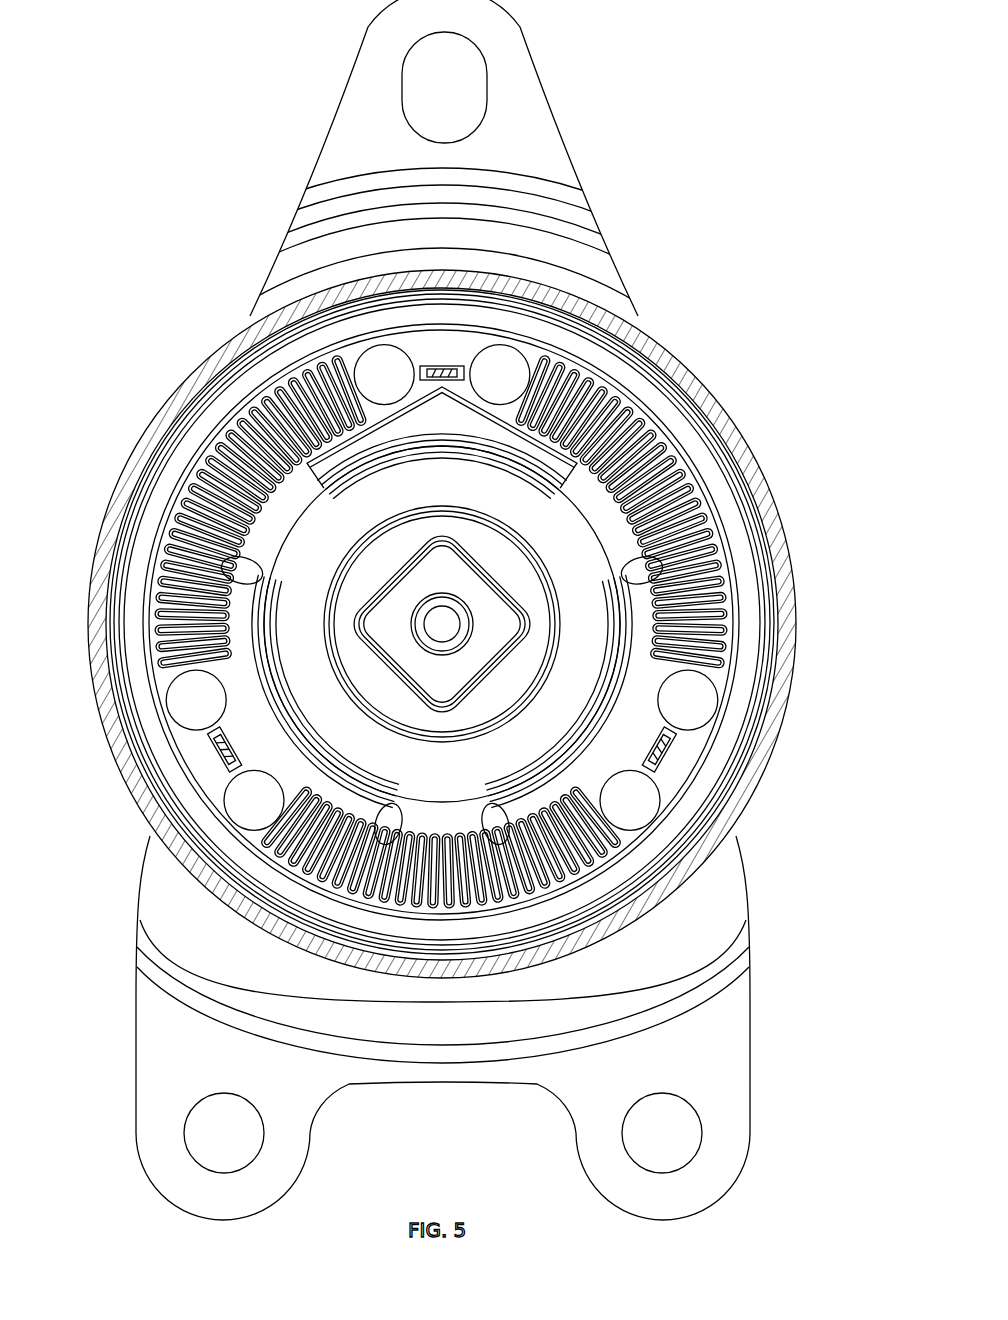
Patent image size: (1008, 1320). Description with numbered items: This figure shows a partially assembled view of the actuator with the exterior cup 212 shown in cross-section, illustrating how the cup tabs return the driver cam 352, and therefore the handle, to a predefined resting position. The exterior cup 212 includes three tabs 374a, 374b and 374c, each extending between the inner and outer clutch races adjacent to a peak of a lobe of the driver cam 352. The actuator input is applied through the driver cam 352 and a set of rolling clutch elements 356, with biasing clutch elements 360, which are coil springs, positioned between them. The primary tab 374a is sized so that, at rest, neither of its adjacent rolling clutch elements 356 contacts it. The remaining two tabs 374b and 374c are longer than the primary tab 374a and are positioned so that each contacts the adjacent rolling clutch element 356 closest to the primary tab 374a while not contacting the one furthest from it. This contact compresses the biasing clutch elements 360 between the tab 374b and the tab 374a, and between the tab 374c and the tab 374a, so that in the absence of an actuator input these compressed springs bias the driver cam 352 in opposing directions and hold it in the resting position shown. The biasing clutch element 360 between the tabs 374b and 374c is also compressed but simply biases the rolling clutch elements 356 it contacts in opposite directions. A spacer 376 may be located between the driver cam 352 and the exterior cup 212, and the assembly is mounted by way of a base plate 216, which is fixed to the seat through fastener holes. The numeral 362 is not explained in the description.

The exterior cup 212 is at (770, 503).
The base plate 216 is at (727, 1055).
The driver cam 352 is at (566, 424).
The rolling clutch elements 356 is at (536, 588).
The biasing clutch elements 360 is at (472, 675).
The cam hub 362 is at (305, 584).
The primary tab 374a is at (295, 334).
The tab 374b is at (776, 781).
The tab 374c is at (130, 770).
The spacer 376 is at (348, 656).